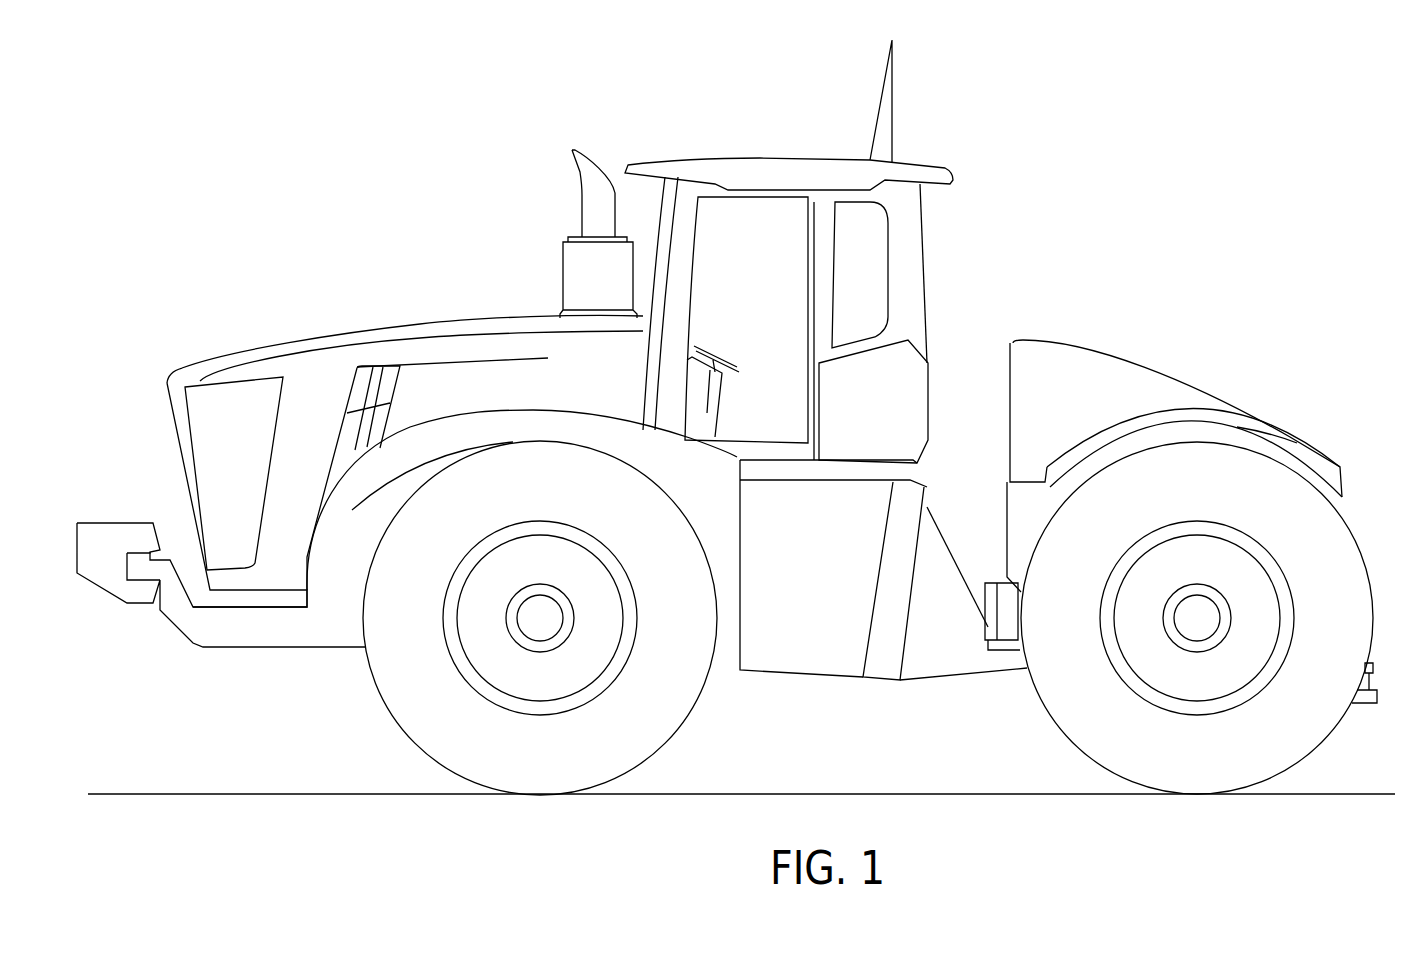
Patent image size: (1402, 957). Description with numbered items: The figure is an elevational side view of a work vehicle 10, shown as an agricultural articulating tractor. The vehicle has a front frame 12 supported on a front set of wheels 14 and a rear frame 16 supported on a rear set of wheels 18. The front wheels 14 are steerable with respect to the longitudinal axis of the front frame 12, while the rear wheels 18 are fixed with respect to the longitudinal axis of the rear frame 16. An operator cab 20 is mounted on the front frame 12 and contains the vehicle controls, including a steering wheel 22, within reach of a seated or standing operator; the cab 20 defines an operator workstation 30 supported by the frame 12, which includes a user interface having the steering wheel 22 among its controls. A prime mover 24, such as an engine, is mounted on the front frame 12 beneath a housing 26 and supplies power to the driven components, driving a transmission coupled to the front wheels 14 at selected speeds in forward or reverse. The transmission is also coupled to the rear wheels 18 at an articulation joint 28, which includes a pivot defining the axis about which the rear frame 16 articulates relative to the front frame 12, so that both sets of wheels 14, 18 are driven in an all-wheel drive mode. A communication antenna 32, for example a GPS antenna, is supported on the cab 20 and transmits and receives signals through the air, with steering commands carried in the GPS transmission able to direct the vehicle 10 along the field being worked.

The work vehicle 10 is at (1228, 303).
The front frame 12 is at (325, 630).
The front set of wheels 14 is at (466, 786).
The rear frame 16 is at (1220, 432).
The rear set of wheels 18 is at (1265, 782).
The operator cab 20 is at (968, 158).
The steering wheel 22 is at (712, 352).
The prime mover 24 is at (415, 383).
The housing 26 is at (306, 358).
The articulation joint 28 is at (990, 562).
The operator workstation 30 is at (708, 413).
The communication antenna 32 is at (893, 118).